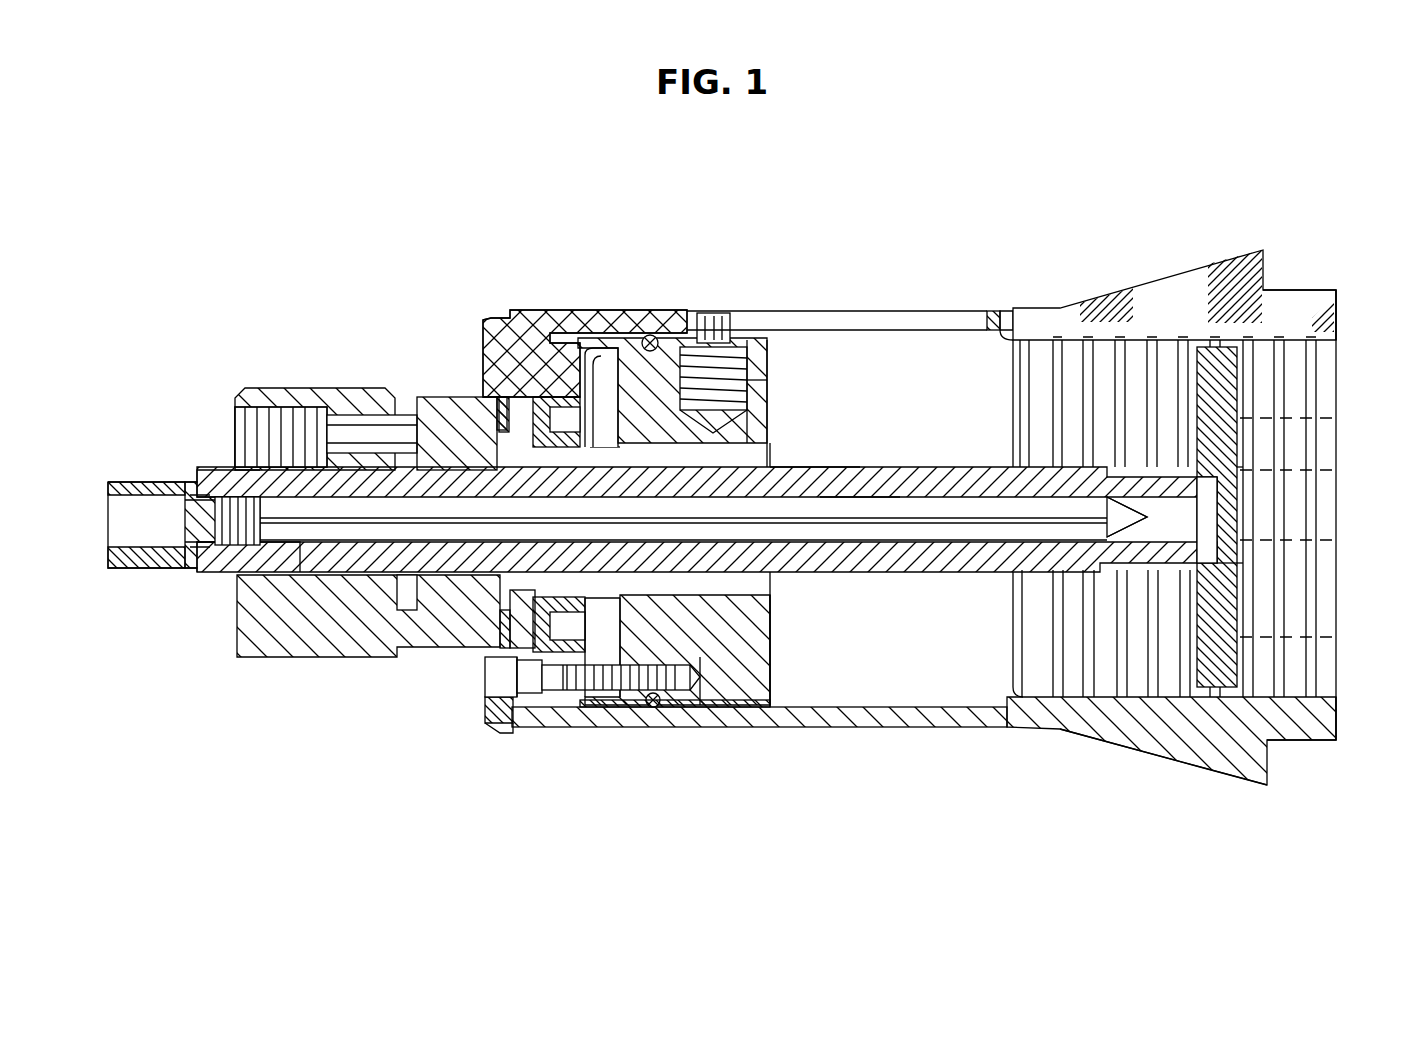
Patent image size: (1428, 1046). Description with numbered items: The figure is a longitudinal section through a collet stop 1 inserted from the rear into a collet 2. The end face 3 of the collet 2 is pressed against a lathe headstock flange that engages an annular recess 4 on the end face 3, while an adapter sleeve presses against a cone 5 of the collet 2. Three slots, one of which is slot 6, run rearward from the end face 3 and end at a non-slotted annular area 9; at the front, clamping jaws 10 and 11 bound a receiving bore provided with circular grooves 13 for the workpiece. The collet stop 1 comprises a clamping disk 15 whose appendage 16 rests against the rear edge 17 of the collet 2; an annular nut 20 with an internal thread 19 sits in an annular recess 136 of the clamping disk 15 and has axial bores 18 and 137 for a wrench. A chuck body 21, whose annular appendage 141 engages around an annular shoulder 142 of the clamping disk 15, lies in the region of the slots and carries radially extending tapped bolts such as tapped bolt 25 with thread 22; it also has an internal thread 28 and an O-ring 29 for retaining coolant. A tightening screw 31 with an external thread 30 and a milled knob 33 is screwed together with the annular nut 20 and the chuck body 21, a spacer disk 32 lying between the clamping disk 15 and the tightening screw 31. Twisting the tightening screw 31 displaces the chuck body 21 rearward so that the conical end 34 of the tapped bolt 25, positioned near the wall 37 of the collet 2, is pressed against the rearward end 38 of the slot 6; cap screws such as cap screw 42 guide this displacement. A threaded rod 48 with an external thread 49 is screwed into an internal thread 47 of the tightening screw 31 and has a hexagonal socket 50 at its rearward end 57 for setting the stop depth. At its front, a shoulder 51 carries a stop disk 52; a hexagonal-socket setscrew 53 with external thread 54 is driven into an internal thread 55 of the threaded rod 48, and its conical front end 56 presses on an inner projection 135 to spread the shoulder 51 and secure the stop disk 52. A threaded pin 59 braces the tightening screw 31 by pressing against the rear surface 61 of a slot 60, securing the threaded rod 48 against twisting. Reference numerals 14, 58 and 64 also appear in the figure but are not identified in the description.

The collet stop 1 is at (965, 462).
The collet 2 is at (960, 730).
The end face 3 is at (1337, 641).
The annular recess 4 is at (1305, 742).
The cone 5 is at (1176, 765).
The slot 6 is at (972, 322).
The non-slotted annular area 9 is at (665, 336).
The clamping jaw 10 is at (1211, 273).
The clamping jaw 11 is at (1125, 718).
The circular grooves 13 is at (1007, 330).
The upper flange portion 14 is at (1336, 352).
The clamping disk 15 is at (545, 392).
The appendage 16 is at (488, 705).
The rear edge 17 is at (525, 729).
The axial bore 18 is at (565, 672).
The internal thread 19 is at (572, 600).
The annular nut 20 is at (560, 420).
The chuck body 21 is at (730, 690).
The thread 22 is at (755, 372).
The tapped bolt 25 is at (748, 387).
The internal thread 28 is at (630, 595).
The O-ring 29 is at (660, 708).
The external thread 30 is at (603, 447).
The tightening screw 31 is at (455, 420).
The spacer disk 32 is at (500, 633).
The milled knob 33 is at (322, 393).
The conical end 34 is at (725, 345).
The wall 37 is at (885, 315).
The rearward end 38 is at (712, 312).
The cap screw 42 is at (745, 677).
The internal thread 47 is at (372, 470).
The threaded rod 48 is at (817, 478).
The external thread 49 is at (856, 478).
The hexagonal socket 50 is at (110, 518).
The shoulder 51 is at (1245, 540).
The stop disk 52 is at (1262, 410).
The hexagonal-socket setscrew 53 is at (912, 512).
The external thread 54 is at (270, 540).
The internal thread 55 is at (185, 548).
The conical front end 56 is at (1113, 497).
The rearward end 57 is at (135, 495).
The threaded hole 58 is at (240, 432).
The threaded pin 59 is at (272, 420).
The slot 60 is at (380, 603).
The rear surface 61 is at (500, 405).
The upper recess 64 is at (1282, 480).
The inner projection 135 is at (1140, 367).
The annular recess 136 is at (648, 340).
The axial bore 137 is at (600, 400).
The annular appendage 141 is at (653, 708).
The annular shoulder 142 is at (504, 398).